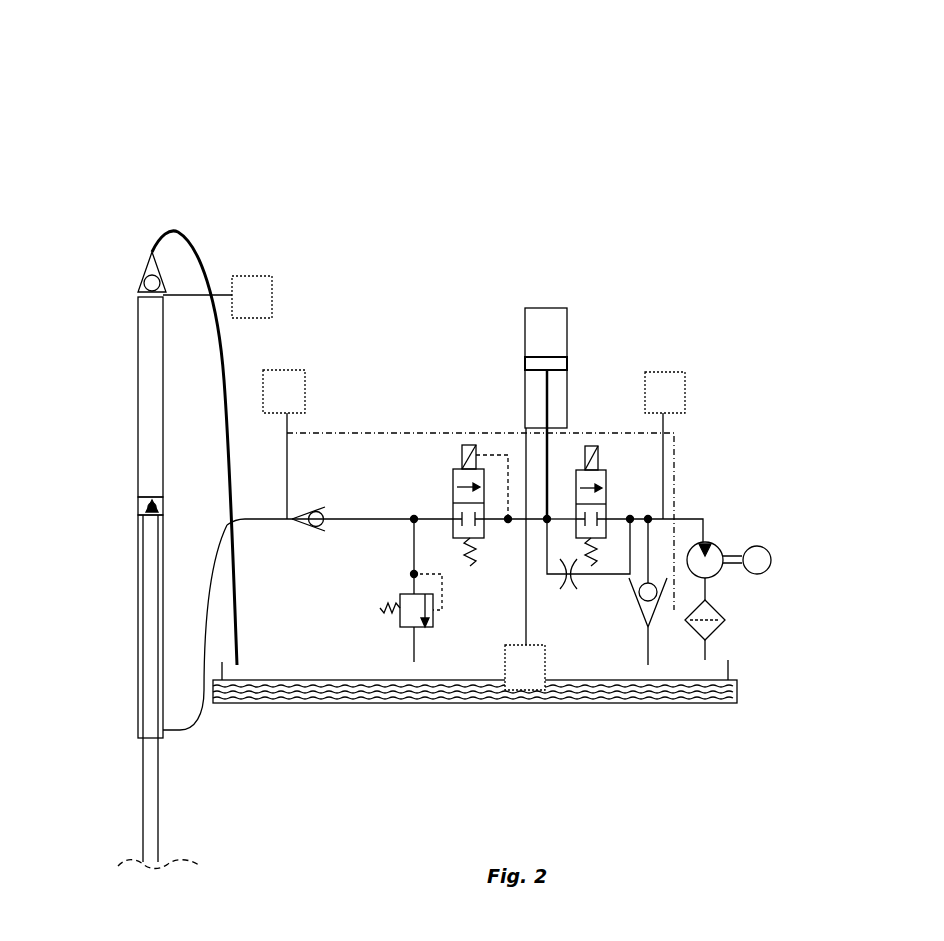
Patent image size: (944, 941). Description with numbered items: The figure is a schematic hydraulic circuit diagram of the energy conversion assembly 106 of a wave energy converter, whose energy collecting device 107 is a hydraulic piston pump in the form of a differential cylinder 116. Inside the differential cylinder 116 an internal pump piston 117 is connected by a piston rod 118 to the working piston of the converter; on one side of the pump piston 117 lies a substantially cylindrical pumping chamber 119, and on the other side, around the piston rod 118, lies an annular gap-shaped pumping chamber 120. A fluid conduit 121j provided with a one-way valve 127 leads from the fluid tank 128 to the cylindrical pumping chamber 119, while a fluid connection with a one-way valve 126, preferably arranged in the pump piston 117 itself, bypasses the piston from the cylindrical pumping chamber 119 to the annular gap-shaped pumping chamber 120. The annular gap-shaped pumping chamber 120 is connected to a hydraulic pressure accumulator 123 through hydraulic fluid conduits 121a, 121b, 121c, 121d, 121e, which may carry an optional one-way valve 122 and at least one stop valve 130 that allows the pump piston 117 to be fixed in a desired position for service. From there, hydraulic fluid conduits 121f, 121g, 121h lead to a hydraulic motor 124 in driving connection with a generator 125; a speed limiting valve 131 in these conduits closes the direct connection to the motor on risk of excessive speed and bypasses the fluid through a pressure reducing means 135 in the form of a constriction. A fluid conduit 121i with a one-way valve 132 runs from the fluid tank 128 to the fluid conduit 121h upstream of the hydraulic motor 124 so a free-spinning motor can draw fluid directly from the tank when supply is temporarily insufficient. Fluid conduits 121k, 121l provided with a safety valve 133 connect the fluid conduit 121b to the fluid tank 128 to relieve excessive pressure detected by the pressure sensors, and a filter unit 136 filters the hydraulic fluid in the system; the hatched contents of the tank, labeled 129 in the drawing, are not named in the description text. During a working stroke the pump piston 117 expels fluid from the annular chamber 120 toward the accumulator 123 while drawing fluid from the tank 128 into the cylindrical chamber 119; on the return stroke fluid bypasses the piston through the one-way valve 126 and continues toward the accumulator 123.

The energy conversion assembly 106 is at (474, 117).
The energy collecting device 107 is at (167, 200).
The differential cylinder 116 is at (123, 321).
The pump piston 117 is at (148, 495).
The piston rod 118 is at (141, 805).
The substantially cylindrical pumping chamber 119 is at (147, 377).
The annular gap-shaped pumping chamber 120 is at (140, 583).
The hydraulic fluid conduit 121a is at (198, 718).
The hydraulic fluid conduit 121b is at (366, 512).
The hydraulic fluid conduit 121c is at (434, 519).
The hydraulic fluid conduit 121d is at (526, 440).
The hydraulic fluid conduit 121e is at (547, 576).
The hydraulic fluid conduit 121f is at (560, 519).
The hydraulic fluid conduit 121g is at (620, 519).
The hydraulic fluid conduit 121h is at (703, 519).
The fluid conduit 121i is at (652, 540).
The fluid conduit 121j is at (222, 357).
The fluid conduit 121k is at (413, 545).
The fluid conduit 121l is at (416, 650).
The one-way valve 122 is at (310, 507).
The hydraulic pressure accumulator 123 is at (552, 308).
The hydraulic motor 124 is at (720, 578).
The generator 125 is at (772, 555).
The one-way valve 126 is at (160, 513).
The one-way valve 127 is at (148, 276).
The fluid tank 128 is at (738, 690).
The hydraulic fluid 129 is at (257, 697).
The stop valve 130 is at (486, 540).
The speed limiting valve 131 is at (605, 466).
The one-way valve 132 is at (637, 590).
The safety valve 133 is at (440, 617).
The pressure reducing means 135 is at (575, 586).
The filter unit 136 is at (728, 622).